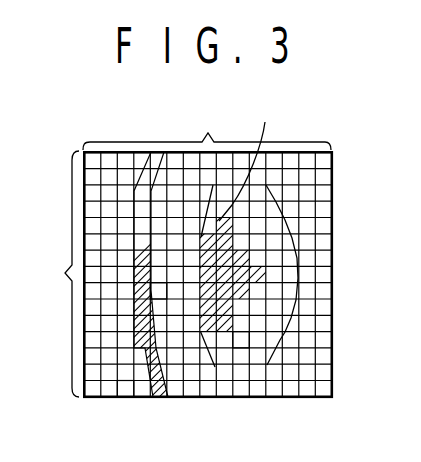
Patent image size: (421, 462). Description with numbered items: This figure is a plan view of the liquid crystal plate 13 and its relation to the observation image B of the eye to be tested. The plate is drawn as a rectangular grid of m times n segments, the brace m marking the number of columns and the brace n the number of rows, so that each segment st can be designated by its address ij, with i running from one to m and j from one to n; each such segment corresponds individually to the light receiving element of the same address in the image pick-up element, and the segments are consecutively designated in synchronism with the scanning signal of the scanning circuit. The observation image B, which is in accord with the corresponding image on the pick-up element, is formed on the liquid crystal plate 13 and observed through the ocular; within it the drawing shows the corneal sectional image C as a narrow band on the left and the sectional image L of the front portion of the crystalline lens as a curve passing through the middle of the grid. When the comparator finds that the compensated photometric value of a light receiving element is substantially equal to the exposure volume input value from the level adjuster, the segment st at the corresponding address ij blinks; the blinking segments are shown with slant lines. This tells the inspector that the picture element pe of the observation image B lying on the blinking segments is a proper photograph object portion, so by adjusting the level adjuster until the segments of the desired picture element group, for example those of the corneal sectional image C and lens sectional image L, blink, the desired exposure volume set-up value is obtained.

The liquid crystal plate 13 is at (336, 268).
The number of segment columns m is at (207, 126).
The number of segment rows n is at (63, 274).
The corneal sectional image C is at (149, 390).
The sectional image of the front portion of the crystalline lens L is at (240, 235).
The observation image B is at (278, 204).
The segment st is at (128, 388).
The segment address ij is at (150, 288).
The picture element pe is at (245, 338).